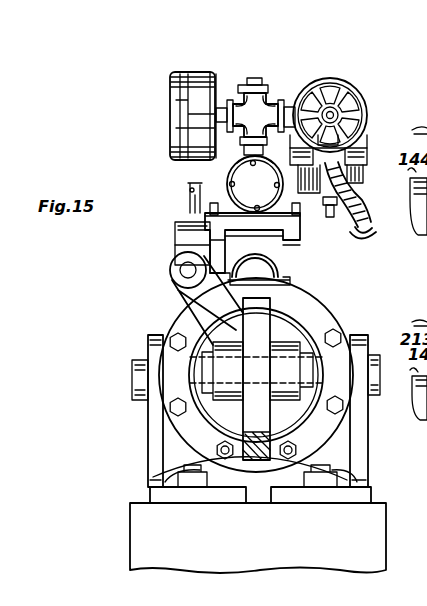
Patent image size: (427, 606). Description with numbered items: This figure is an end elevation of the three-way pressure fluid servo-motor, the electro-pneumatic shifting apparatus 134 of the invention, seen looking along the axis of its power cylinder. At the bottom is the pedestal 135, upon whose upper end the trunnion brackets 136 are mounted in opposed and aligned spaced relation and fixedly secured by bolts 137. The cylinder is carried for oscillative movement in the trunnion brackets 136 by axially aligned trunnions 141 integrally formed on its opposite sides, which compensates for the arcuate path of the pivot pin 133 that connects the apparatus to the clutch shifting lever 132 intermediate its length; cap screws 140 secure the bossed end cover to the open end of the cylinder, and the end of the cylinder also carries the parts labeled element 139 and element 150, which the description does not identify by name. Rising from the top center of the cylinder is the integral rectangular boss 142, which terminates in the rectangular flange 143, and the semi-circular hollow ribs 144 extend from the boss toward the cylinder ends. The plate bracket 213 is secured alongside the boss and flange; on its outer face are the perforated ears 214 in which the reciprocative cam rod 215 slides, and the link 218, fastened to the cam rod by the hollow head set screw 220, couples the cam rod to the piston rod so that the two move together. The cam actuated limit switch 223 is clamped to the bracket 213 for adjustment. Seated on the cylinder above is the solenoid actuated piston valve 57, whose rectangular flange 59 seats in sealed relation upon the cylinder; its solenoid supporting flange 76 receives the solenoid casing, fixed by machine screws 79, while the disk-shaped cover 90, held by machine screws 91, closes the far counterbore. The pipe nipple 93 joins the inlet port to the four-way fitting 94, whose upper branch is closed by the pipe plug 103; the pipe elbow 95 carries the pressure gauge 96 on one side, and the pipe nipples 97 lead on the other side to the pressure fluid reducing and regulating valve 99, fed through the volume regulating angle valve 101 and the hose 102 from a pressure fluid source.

The solenoid actuated piston valve 57 is at (200, 65).
The pressure gauge 96 is at (168, 97).
The pipe elbow 95 is at (232, 98).
The four-way fitting 94 is at (242, 103).
The pipe plug 103 is at (254, 79).
The pipe nipples 97 is at (284, 107).
The pressure fluid volume regulating angle valve 101 is at (327, 87).
The pressure fluid reducing and regulating valve 99 is at (350, 186).
The hose 102 is at (350, 230).
The disk-shaped cover 90 is at (330, 217).
The pipe nipple 93 is at (243, 149).
The machine screws 91 is at (231, 182).
The solenoid supporting flange 76 is at (192, 186).
The machine screws 79 is at (193, 206).
The rectangular flange 59 is at (208, 216).
The plate bracket 213 is at (242, 246).
The limit switch 223 is at (215, 232).
The rectangular flange 143 is at (215, 239).
The perforated ears 214 is at (180, 248).
The cam rod 215 is at (180, 270).
The hollow head set screw 220 is at (178, 283).
The link 218 is at (203, 316).
The rectangular boss 142 is at (300, 250).
The semi-circular hollow ribs 144 is at (300, 268).
The pivot pin 133 is at (320, 332).
The flange bolts 139 is at (322, 428).
The bearing housing 150 is at (205, 412).
The clutch shifting lever 132 is at (262, 322).
The three-way electro-pneumatic shifting apparatus 134 is at (127, 330).
The trunnions 141 is at (133, 379).
The trunnion brackets 136 is at (150, 446).
The bolts 137 is at (175, 465).
The pedestal 135 is at (140, 537).
The cap screws 140 is at (225, 455).